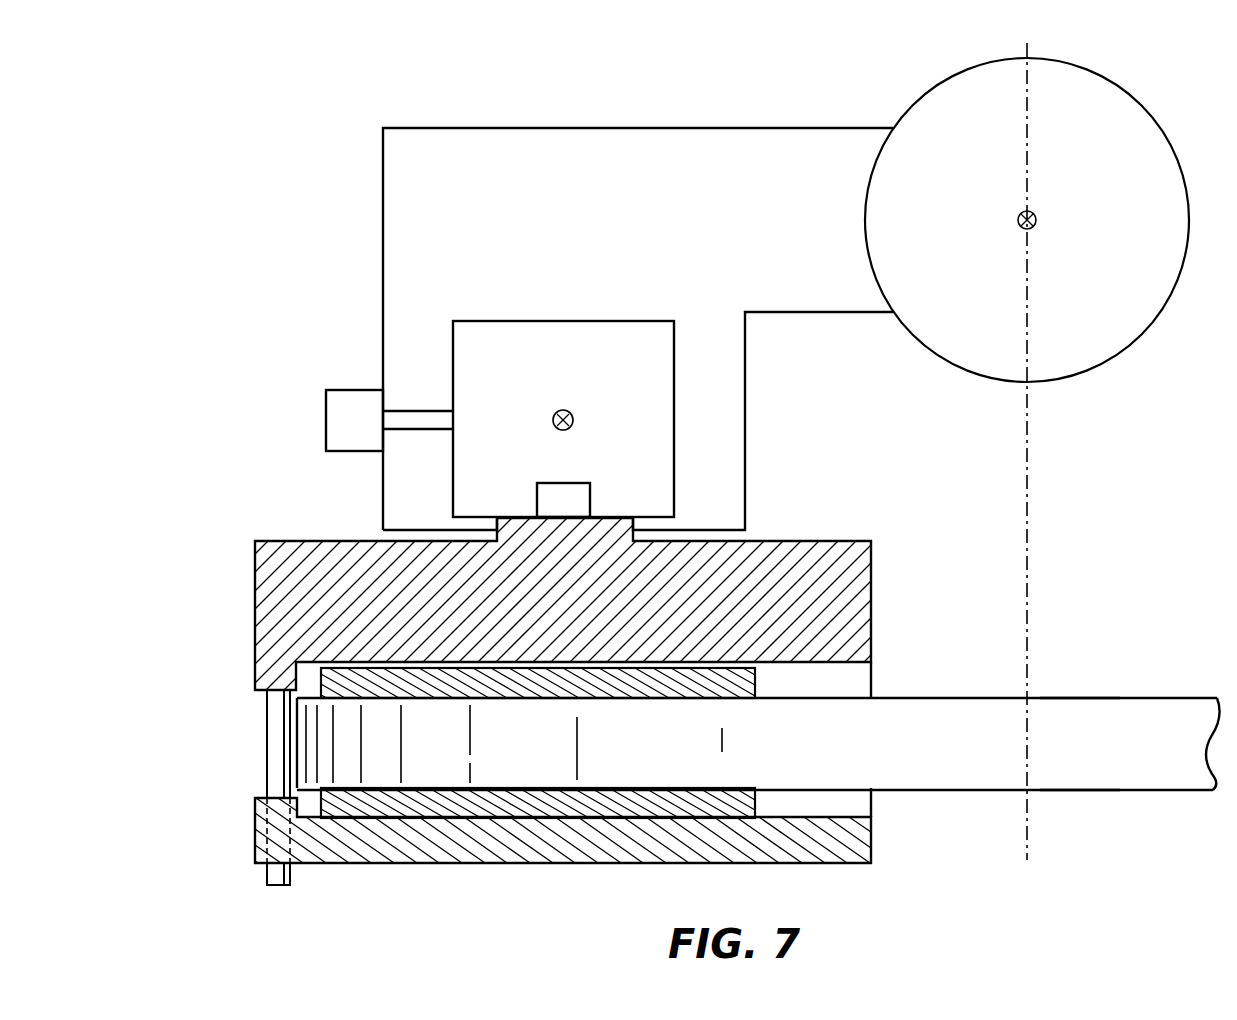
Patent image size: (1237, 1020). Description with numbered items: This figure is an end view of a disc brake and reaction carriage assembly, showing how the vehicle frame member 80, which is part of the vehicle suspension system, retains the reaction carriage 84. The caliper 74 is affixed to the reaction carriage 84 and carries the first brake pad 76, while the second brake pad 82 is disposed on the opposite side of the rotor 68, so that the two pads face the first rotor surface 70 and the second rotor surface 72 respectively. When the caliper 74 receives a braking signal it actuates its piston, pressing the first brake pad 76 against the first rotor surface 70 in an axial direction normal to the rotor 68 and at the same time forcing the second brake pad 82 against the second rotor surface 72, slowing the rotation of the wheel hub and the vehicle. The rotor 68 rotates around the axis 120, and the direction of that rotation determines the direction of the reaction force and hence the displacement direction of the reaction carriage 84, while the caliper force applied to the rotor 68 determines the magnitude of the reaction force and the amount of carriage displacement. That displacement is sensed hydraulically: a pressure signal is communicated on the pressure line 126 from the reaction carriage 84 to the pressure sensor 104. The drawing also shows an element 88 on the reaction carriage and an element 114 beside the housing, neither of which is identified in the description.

The rotor 68 is at (795, 758).
The first rotor surface 70 is at (1080, 790).
The second rotor surface 72 is at (1080, 698).
The caliper 74 is at (255, 614).
The first brake pad 76 is at (740, 802).
The vehicle frame member 80 is at (1083, 278).
The second brake pad 82 is at (738, 683).
The reaction carriage 84 is at (592, 407).
The motor mount 88 is at (577, 500).
The pressure sensor 104 is at (348, 397).
The fastener 114 is at (275, 745).
The axis 120 is at (1028, 528).
The pressure line 126 is at (413, 419).